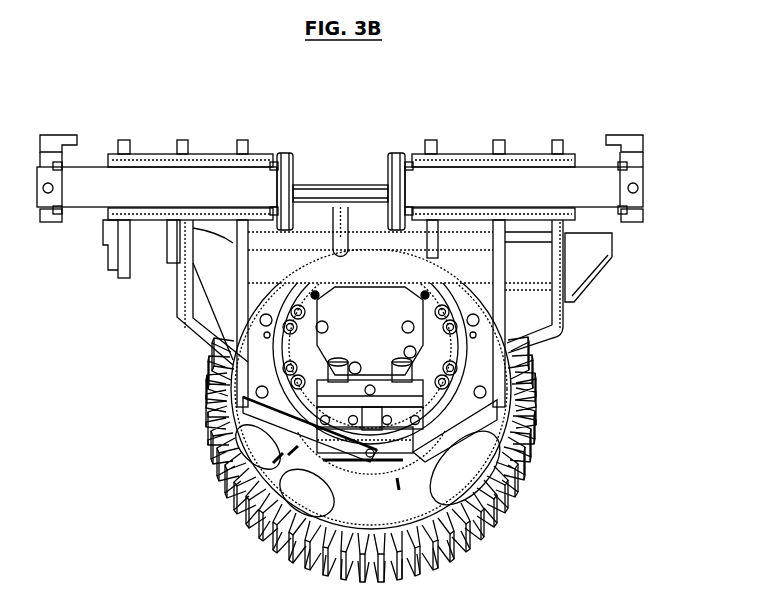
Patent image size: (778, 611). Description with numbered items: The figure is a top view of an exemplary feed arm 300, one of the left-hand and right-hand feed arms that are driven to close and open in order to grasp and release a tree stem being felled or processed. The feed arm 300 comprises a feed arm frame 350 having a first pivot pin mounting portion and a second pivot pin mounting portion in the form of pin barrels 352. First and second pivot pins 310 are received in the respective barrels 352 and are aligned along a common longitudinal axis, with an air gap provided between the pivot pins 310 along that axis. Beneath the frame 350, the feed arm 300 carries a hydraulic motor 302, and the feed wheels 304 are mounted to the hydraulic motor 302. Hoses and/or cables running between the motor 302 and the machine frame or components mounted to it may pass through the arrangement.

The feed arm 300 is at (643, 391).
The hydraulic motor 302 is at (230, 443).
The feed wheels 304 is at (508, 500).
The pivot pins 310 is at (88, 177).
The feed arm frame 350 is at (189, 343).
The pin barrels 352 is at (204, 146).